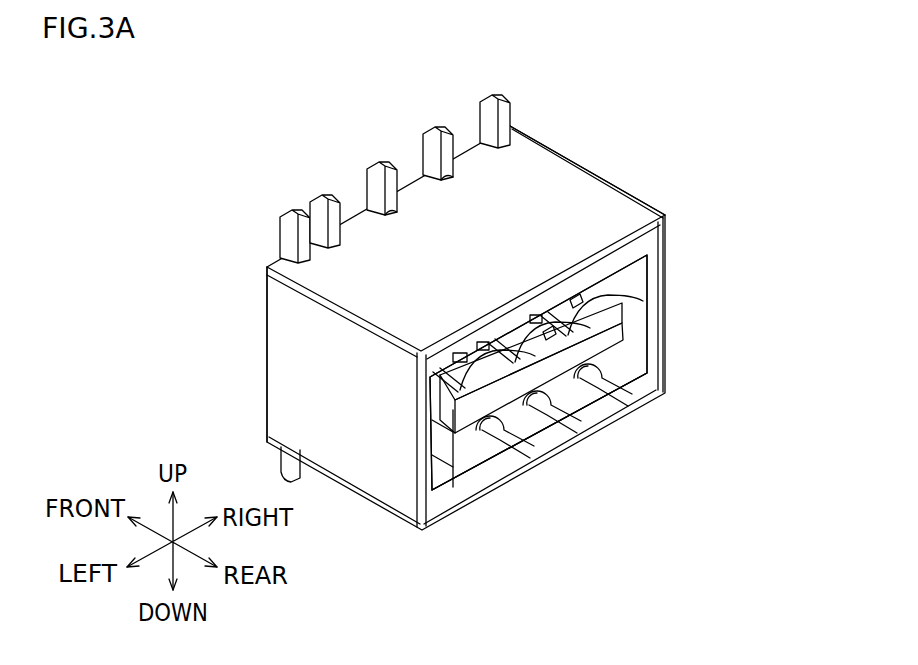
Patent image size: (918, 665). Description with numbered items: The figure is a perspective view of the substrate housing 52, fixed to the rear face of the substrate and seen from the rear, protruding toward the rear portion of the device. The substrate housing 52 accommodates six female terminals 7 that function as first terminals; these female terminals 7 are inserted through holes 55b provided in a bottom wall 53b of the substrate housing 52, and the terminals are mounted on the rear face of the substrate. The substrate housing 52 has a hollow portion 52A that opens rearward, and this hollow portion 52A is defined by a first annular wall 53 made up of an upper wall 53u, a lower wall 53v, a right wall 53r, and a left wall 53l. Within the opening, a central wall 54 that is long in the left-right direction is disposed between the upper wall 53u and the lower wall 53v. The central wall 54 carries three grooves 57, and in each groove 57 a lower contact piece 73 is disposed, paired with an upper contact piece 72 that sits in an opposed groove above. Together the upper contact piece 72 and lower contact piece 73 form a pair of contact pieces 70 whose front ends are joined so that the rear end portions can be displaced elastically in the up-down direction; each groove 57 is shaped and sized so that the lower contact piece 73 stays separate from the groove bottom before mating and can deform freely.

The female terminal 7 is at (375, 151).
The substrate housing 52 is at (707, 96).
The hollow portion 52A is at (636, 360).
The first annular wall 53 is at (603, 155).
The bottom wall 53b is at (266, 353).
The left wall 53l is at (386, 457).
The right wall 53r is at (668, 341).
The upper wall 53u is at (537, 170).
The lower wall 53v is at (586, 425).
The central wall 54 is at (487, 410).
The hole 55b is at (456, 178).
The groove 57 is at (568, 300).
The pair of contact pieces 70 is at (605, 350).
The upper contact piece 72 is at (598, 290).
The lower contact piece 73 is at (628, 322).